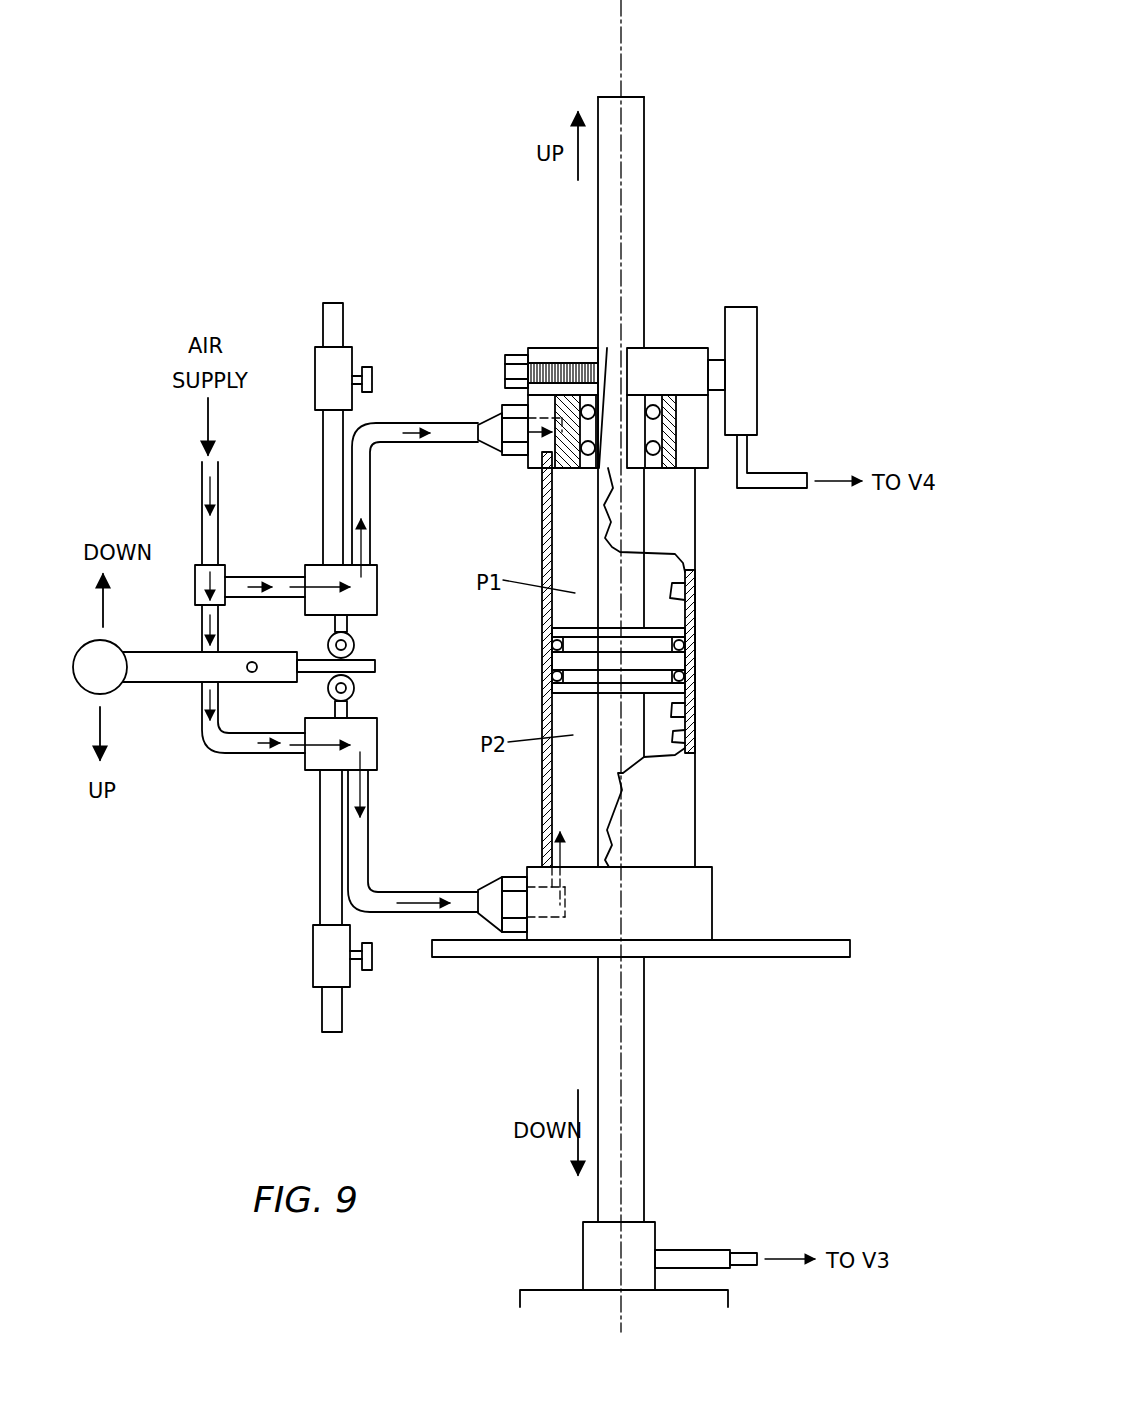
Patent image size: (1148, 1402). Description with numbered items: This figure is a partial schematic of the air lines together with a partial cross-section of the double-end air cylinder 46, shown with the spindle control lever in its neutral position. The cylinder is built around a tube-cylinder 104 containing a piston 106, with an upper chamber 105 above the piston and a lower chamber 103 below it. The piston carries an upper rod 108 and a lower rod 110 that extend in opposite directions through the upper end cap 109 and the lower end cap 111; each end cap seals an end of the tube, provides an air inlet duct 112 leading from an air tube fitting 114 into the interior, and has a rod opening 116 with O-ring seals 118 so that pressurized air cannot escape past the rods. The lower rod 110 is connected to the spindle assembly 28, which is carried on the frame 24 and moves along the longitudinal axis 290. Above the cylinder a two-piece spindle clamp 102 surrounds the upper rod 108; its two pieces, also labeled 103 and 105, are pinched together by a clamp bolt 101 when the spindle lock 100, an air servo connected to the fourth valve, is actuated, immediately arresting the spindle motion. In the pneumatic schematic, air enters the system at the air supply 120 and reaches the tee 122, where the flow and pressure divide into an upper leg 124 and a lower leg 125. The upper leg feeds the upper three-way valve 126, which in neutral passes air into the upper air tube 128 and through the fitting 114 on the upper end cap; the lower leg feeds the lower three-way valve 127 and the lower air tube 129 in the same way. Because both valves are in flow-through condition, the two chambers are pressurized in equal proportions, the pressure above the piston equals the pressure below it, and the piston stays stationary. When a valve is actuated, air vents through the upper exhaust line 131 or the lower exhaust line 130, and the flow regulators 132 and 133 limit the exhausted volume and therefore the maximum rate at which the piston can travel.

The longitudinal axis 290 is at (674, 666).
The upper rod 108 is at (666, 482).
The lower chamber 103 is at (750, 717).
The clamp bolt 101 is at (551, 322).
The upper chamber 105 is at (750, 607).
The spindle clamp 102 is at (644, 364).
The rod opening 116 is at (632, 457).
The upper end cap 109 is at (499, 407).
The air inlet duct 112 is at (571, 683).
The spindle lock 100 is at (780, 397).
The double-end air cylinder 46 is at (697, 562).
The O-ring seals 118 is at (638, 476).
The tube-cylinder 104 is at (688, 745).
The piston 106 is at (677, 663).
The lower end cap 111 is at (662, 895).
The frame 24 is at (646, 921).
The lower rod 110 is at (670, 1123).
The spindle assembly 28 is at (738, 1297).
The air tube fitting 114 is at (479, 668).
The upper air tube 128 is at (370, 498).
The lower air tube 129 is at (413, 832).
The flow regulator 132 is at (352, 348).
The upper exhaust line 131 is at (323, 490).
The lower exhaust line 130 is at (320, 865).
The flow regulator 133 is at (313, 967).
The upper three-way valve 126 is at (382, 605).
The lower three-way valve 127 is at (383, 727).
The air supply 120 is at (210, 418).
The tee 122 is at (195, 590).
The upper leg 124 is at (266, 559).
The lower leg 125 is at (253, 744).